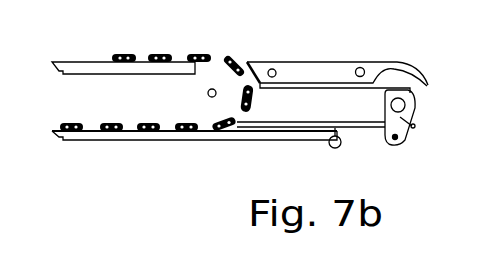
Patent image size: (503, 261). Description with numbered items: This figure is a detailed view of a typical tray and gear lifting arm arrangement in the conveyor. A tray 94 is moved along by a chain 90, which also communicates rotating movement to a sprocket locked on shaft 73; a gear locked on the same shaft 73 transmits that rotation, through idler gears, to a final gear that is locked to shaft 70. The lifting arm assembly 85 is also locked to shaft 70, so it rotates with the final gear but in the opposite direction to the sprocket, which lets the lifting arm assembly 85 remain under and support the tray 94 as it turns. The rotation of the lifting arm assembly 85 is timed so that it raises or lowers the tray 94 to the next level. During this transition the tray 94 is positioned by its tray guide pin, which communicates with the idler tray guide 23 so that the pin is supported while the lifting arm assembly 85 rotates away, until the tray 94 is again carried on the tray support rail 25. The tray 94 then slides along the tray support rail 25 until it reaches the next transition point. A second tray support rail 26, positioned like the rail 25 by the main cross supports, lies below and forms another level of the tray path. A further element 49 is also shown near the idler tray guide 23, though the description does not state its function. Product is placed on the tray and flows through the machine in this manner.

The idler tray guide 23 is at (337, 86).
The tray support rail 25 is at (72, 74).
The tray support rail 26 is at (77, 141).
The pivot pin 49 is at (363, 69).
The shaft 70 is at (402, 102).
The shaft 73 is at (208, 94).
The lifting arm assembly 85 is at (414, 127).
The chain 90 is at (145, 132).
The tray 94 is at (335, 124).